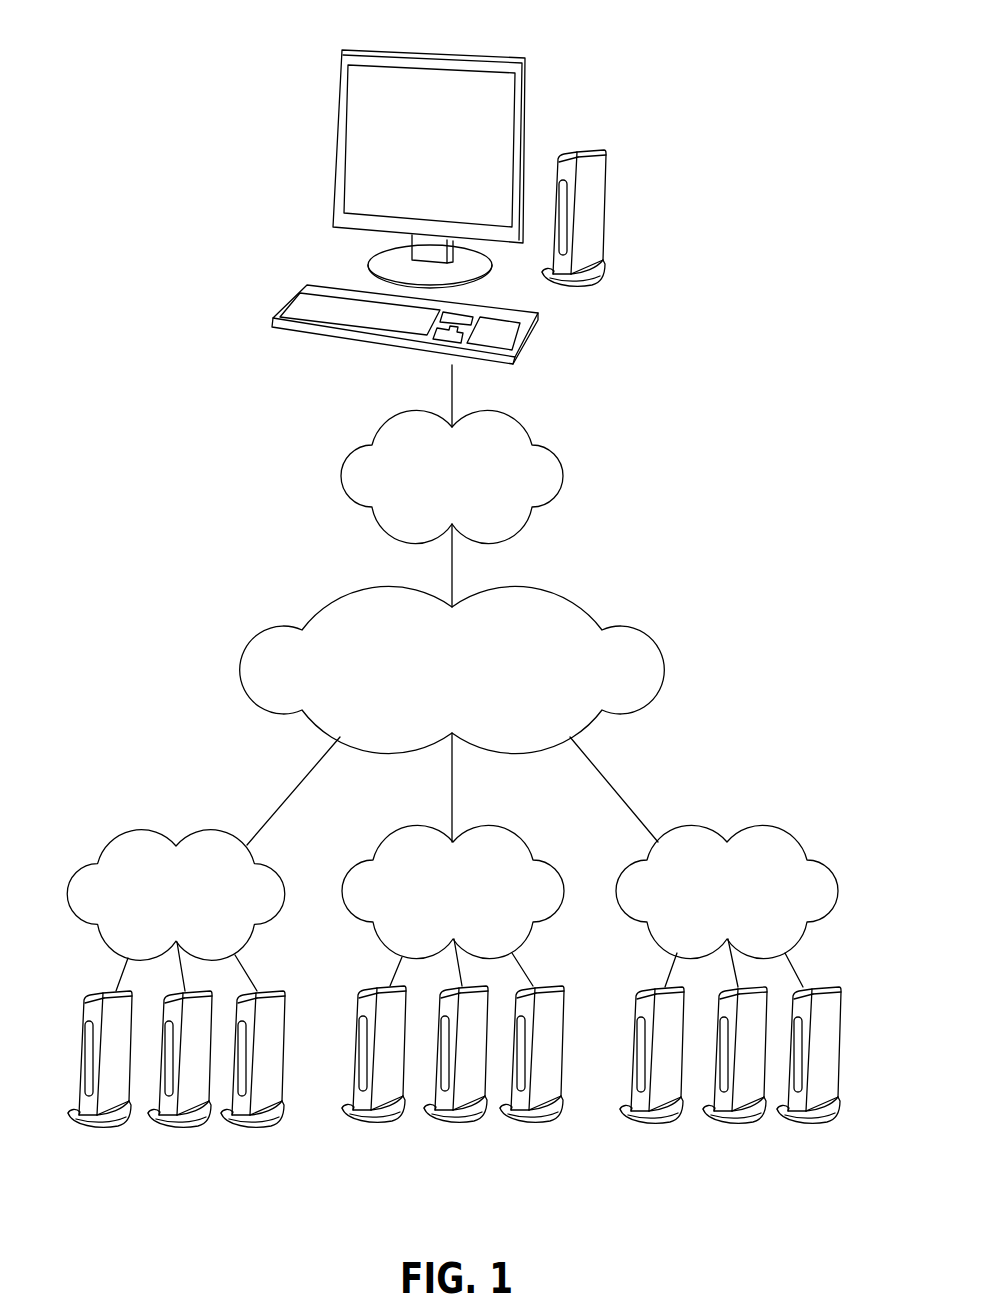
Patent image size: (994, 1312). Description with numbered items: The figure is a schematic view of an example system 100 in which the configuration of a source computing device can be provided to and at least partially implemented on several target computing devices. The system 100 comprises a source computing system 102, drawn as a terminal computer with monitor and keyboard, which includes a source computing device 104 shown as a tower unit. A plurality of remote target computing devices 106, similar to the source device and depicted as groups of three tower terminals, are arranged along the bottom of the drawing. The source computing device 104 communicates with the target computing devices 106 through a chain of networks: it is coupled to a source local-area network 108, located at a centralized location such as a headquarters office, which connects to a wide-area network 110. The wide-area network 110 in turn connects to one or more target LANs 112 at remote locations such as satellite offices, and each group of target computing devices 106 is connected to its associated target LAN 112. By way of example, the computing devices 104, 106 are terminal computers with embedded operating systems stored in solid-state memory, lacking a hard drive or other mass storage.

The system 100 is at (796, 62).
The source computing system 102 is at (266, 146).
The source computing device 104 is at (597, 238).
The remote target computing devices 106 is at (68, 1135).
The source local-area network (LAN) 108 is at (433, 498).
The wide-area network (WAN) 110 is at (433, 693).
The target LANs 112 is at (157, 918).